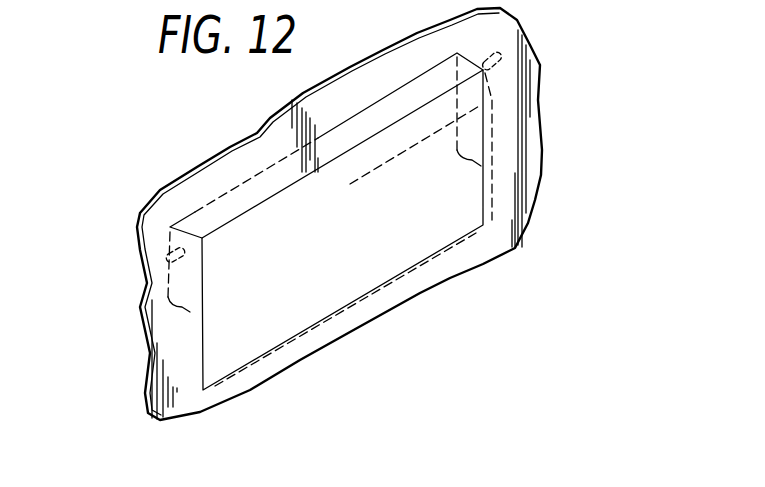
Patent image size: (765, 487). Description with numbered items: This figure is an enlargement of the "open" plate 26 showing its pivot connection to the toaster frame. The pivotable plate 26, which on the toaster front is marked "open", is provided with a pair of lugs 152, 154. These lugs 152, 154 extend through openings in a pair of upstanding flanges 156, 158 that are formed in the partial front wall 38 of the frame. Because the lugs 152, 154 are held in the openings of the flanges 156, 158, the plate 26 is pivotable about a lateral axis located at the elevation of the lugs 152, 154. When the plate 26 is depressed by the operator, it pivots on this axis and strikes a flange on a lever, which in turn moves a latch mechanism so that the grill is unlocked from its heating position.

The pivotable plate 26 is at (278, 333).
The partial front wall 38 is at (515, 231).
The lug 152 is at (165, 258).
The lug 154 is at (502, 57).
The upstanding flange 156 is at (192, 311).
The upstanding flange 158 is at (465, 138).